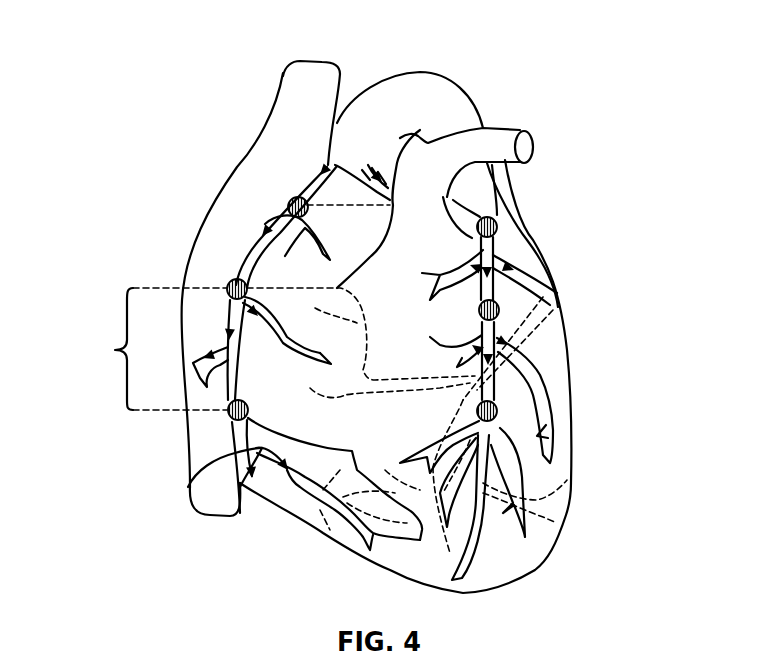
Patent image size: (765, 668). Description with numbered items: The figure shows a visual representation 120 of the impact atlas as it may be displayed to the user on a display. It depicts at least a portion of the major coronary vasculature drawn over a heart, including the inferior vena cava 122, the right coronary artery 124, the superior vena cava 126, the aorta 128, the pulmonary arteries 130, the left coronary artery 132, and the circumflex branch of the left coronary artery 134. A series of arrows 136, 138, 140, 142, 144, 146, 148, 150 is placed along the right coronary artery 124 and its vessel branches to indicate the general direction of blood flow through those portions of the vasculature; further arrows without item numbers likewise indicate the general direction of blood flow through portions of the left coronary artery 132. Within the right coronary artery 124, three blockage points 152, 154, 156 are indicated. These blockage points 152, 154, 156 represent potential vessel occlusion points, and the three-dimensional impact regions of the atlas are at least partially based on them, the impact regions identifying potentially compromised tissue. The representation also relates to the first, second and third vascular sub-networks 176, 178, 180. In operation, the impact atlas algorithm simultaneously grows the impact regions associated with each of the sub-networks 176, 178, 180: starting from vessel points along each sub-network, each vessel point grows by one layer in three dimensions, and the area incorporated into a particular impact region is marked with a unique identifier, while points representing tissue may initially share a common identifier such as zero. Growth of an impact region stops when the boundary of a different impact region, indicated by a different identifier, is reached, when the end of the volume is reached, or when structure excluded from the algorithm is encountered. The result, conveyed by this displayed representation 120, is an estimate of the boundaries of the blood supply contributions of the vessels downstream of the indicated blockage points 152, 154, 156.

The visual representation 120 is at (142, 49).
The inferior vena cava 122 is at (210, 500).
The right coronary artery 124 is at (250, 258).
The superior vena cava 126 is at (293, 97).
The aorta 128 is at (430, 90).
The pulmonary arteries 130 is at (430, 161).
The left coronary artery 132 is at (500, 242).
The circumflex branch of the left coronary artery 134 is at (463, 377).
The arrow 136 is at (325, 166).
The arrow 138 is at (272, 229).
The arrow 140 is at (240, 322).
The arrow 142 is at (187, 488).
The arrow 144 is at (262, 470).
The arrow 146 is at (222, 316).
The arrow 148 is at (327, 247).
The arrow 150 is at (240, 338).
The blockage point 152 is at (285, 205).
The blockage point 154 is at (228, 287).
The blockage point 156 is at (227, 411).
The first vascular sub-network 176 is at (361, 301).
The second vascular sub-network 178 is at (148, 349).
The third vascular sub-network 180 is at (359, 476).